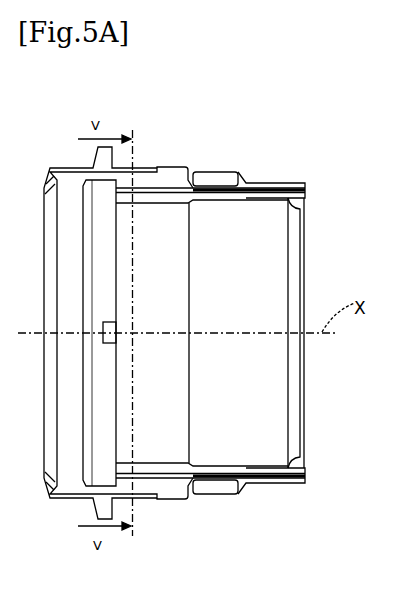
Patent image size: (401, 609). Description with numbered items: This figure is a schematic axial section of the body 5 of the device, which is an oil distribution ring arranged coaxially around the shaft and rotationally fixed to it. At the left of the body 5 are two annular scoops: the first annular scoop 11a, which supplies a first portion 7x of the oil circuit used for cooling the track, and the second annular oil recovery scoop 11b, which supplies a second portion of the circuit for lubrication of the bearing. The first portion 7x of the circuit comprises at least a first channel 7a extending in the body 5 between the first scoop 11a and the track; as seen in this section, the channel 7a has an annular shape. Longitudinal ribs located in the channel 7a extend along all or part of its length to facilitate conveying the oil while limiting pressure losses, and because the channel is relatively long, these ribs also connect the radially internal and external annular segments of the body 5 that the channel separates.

The oil distribution ring 5 is at (306, 182).
The first annular scoop 11a is at (93, 499).
The second annular oil recovery scoop 11b is at (48, 498).
The first portion of the circuit 7x is at (165, 472).
The first channel 7a is at (210, 364).